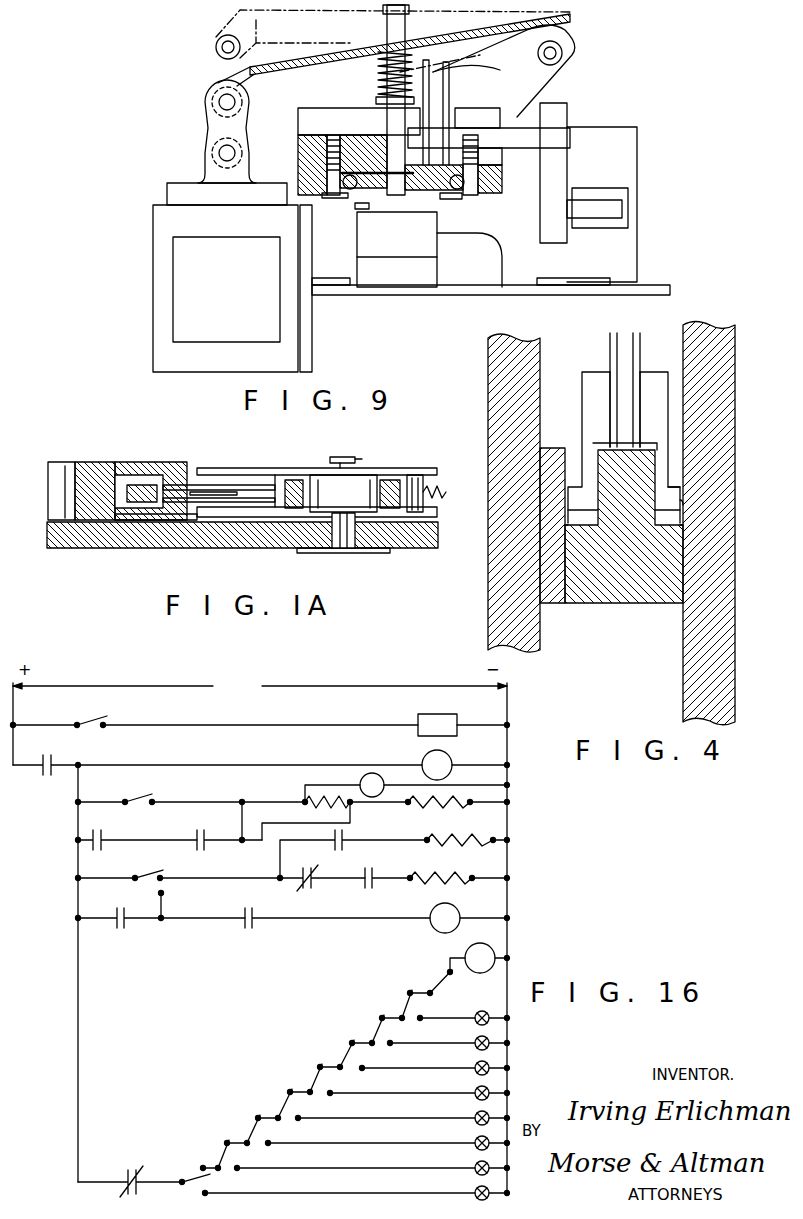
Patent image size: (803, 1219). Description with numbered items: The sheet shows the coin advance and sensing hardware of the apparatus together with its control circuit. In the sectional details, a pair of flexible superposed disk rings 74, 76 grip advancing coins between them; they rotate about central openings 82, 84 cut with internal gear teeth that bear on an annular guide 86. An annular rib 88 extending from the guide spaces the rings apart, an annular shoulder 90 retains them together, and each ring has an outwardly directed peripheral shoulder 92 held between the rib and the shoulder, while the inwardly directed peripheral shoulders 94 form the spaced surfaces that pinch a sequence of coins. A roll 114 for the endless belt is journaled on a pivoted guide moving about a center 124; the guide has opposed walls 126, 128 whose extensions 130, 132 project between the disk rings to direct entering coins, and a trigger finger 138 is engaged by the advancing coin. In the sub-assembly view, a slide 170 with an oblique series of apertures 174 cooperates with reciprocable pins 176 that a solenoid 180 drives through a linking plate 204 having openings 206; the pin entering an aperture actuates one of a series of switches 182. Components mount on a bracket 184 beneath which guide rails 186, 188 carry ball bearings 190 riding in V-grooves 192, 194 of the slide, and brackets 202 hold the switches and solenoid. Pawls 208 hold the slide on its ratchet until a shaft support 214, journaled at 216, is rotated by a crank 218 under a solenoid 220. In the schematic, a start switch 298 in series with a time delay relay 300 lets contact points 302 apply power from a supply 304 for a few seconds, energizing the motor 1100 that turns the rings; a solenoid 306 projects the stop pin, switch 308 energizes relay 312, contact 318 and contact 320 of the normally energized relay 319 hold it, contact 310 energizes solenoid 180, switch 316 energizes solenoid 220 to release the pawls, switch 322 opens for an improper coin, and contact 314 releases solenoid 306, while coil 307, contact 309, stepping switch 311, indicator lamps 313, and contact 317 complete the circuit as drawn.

In FIG. 1A, the disk ring 74 is at (150, 520).
In FIG. 4, the disk ring 74 is at (590, 400).
In FIG. 1A, the disk ring 76 is at (150, 462).
In FIG. 4, the disk ring 76 is at (665, 372).
In FIG. 4, the central opening 82 is at (540, 543).
In FIG. 4, the central opening 84 is at (665, 540).
In FIG. 1A, the annular guide 86 is at (93, 462).
In FIG. 4, the annular guide 86 is at (645, 603).
In FIG. 1A, the annular rib 88 is at (140, 485).
In FIG. 4, the annular rib 88 is at (625, 540).
In FIG. 4, the annular shoulder 90 is at (550, 460).
In FIG. 4, the outwardly directed peripheral shoulder 92 is at (678, 488).
In FIG. 4, the inwardly directed peripheral shoulder 94 is at (640, 393).
In FIG. 1A, the roll 114 is at (322, 475).
In FIG. 1A, the center 124 is at (343, 550).
In FIG. 1A, the opposed wall 126 is at (412, 470).
In FIG. 1A, the opposed wall 128 is at (408, 553).
In FIG. 1A, the opposed extension 130 is at (258, 517).
In FIG. 1A, the opposed extension 132 is at (258, 468).
In FIG. 16, the trigger finger 138 is at (143, 795).
In FIG. 9, the slide 170 is at (377, 205).
In FIG. 9, the apertures 174 is at (405, 200).
In FIG. 9, the reciprocable pins 176 is at (400, 14).
In FIG. 9, the solenoid 180 is at (256, 300).
In FIG. 16, the solenoid 180 is at (462, 834).
In FIG. 9, the switches 182 is at (430, 250).
In FIG. 9, the bracket 184 is at (298, 123).
In FIG. 9, the guide rail 186 is at (300, 175).
In FIG. 9, the guide rail 188 is at (492, 183).
In FIG. 9, the ball bearings 190 is at (347, 190).
In FIG. 9, the V-groove 192 is at (331, 215).
In FIG. 9, the V-groove 194 is at (445, 200).
In FIG. 9, the brackets 202 is at (368, 296).
In FIG. 9, the linking plate 204 is at (212, 128).
In FIG. 9, the openings 206 is at (382, 54).
In FIG. 9, the pawls 208 is at (478, 80).
In FIG. 9, the shaft support 214 is at (495, 128).
In FIG. 9, the journal 216 is at (465, 112).
In FIG. 9, the crank 218 is at (555, 167).
In FIG. 9, the solenoid 220 is at (625, 210).
In FIG. 16, the solenoid 220 is at (448, 872).
In FIG. 16, the start switch 298 is at (97, 730).
In FIG. 16, the time delay relay 300 is at (418, 716).
In FIG. 16, the contact points 302 is at (58, 772).
In FIG. 16, the power supply 304 is at (260, 936).
In FIG. 16, the solenoid 306 is at (440, 806).
In FIG. 16, the relay coil 307 is at (362, 778).
In FIG. 16, the double pole single throw switch 308 is at (148, 876).
In FIG. 16, the contact 309 is at (92, 845).
In FIG. 16, the contact 310 is at (344, 838).
In FIG. 16, the stepping switch 311 is at (332, 1037).
In FIG. 16, the four-pole double throw relay 312 is at (445, 925).
In FIG. 16, the indicator lamps 313 is at (512, 1049).
In FIG. 16, the contact 314 is at (206, 845).
In FIG. 16, the switch 316 is at (374, 870).
In FIG. 16, the contact 317 is at (312, 888).
In FIG. 16, the contact 318 is at (125, 925).
In FIG. 16, the relay 319 is at (495, 950).
In FIG. 16, the contact 320 is at (255, 925).
In FIG. 16, the switch 322 is at (142, 1170).
In FIG. 16, the motor 1100 is at (448, 760).